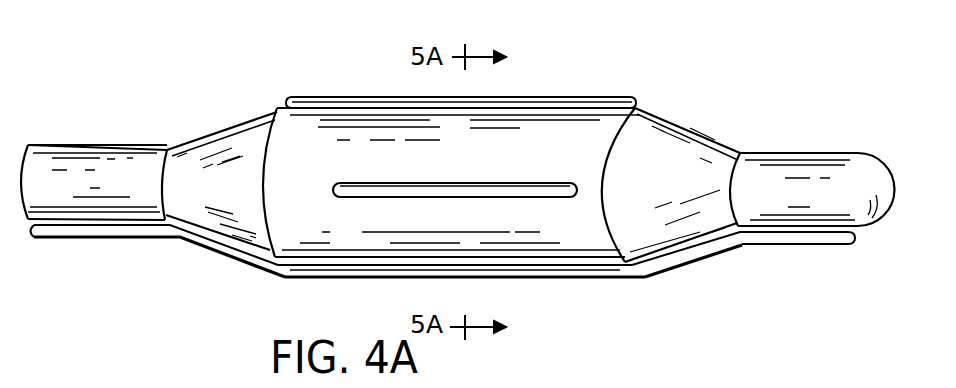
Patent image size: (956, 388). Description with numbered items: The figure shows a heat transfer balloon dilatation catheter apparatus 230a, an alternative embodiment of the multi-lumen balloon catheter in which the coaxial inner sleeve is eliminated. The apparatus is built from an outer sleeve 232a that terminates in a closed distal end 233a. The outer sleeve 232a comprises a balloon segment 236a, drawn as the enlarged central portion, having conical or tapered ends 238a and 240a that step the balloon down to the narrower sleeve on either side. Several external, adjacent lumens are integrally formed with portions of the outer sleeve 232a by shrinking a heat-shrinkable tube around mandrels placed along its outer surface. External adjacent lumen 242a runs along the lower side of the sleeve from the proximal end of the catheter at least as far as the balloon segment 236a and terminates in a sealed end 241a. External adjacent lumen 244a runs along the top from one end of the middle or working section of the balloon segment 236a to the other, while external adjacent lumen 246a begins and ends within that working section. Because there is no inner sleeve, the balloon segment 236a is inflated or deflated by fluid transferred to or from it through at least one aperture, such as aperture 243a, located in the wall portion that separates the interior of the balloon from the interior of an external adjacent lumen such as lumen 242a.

The heat transfer balloon dilatation catheter apparatus 230a is at (676, 70).
The outer sleeve 232a is at (120, 143).
The closed distal end 233a is at (868, 153).
The balloon segment 236a is at (300, 130).
The conical end 238a is at (225, 128).
The conical end 240a is at (693, 160).
The sealed end 241a is at (852, 240).
The external adjacent lumen 242a is at (242, 258).
The aperture 243a is at (460, 265).
The external adjacent lumen 244a is at (590, 103).
The external adjacent lumen 246a is at (533, 185).